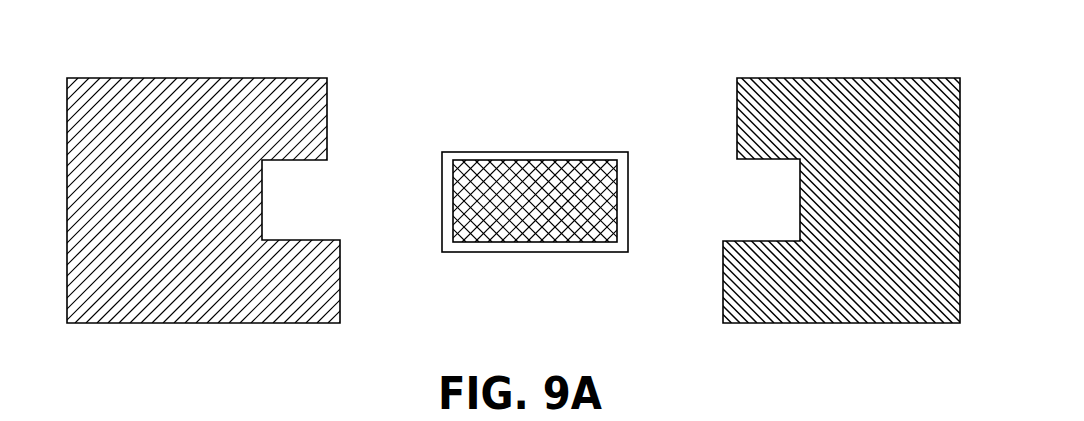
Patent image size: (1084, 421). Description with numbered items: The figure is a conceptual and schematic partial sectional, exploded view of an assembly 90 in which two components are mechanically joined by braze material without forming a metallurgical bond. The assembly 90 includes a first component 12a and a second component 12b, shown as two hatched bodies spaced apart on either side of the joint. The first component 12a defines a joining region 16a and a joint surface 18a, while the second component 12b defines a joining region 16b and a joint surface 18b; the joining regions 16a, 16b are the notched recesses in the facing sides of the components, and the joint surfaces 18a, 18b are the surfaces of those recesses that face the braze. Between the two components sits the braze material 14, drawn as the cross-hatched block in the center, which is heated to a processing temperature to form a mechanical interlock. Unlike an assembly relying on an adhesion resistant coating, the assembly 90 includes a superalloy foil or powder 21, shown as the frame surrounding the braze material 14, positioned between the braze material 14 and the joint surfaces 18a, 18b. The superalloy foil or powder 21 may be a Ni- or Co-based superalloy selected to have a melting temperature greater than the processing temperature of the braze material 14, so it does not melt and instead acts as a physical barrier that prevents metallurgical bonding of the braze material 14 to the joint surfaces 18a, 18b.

The assembly 90 is at (121, 42).
The first component 12a is at (138, 323).
The second component 12b is at (867, 323).
The braze material 14 is at (533, 160).
The superalloy foil or powder 21 is at (572, 152).
The joining region 16a is at (352, 158).
The joining region 16b is at (708, 158).
The joint surface 18a is at (300, 167).
The joint surface 18b is at (758, 170).